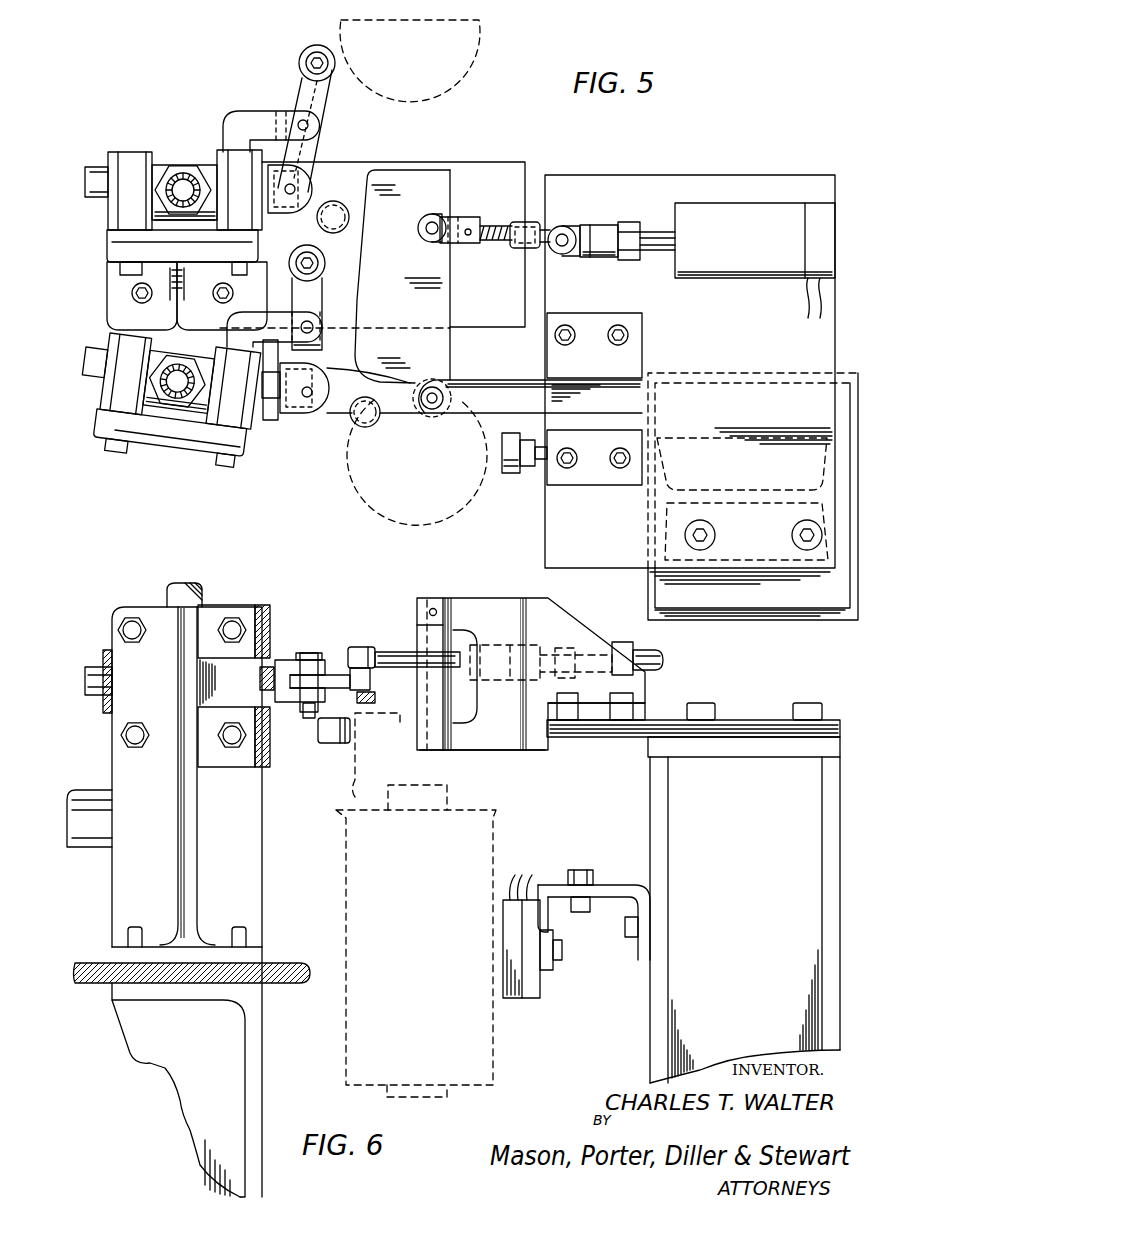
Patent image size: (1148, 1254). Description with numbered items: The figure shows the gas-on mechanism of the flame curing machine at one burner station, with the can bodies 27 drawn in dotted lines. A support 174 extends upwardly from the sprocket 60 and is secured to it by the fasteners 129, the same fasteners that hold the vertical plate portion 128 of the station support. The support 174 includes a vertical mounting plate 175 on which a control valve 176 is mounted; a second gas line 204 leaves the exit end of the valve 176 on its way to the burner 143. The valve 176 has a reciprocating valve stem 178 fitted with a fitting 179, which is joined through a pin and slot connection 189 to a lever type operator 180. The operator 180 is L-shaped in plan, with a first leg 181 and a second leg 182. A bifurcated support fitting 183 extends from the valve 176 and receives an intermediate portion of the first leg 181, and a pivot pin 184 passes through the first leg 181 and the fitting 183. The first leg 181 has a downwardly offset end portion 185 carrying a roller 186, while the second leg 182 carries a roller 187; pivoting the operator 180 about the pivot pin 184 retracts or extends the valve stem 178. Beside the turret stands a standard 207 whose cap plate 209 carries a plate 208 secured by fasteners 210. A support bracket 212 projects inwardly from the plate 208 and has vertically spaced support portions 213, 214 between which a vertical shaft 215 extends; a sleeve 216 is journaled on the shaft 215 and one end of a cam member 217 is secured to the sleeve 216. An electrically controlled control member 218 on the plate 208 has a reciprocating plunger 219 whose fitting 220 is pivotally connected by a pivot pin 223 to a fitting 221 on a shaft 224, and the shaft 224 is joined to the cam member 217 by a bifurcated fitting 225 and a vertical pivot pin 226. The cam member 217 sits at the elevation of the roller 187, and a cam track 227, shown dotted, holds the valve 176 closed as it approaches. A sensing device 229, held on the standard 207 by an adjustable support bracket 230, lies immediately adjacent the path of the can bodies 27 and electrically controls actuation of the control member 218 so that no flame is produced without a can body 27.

In FIG. 5, the can body 27 is at (450, 89).
In FIG. 6, the can body 27 is at (497, 845).
In FIG. 6, the sprocket 60 is at (287, 965).
In FIG. 6, the vertical plate portion 128 is at (256, 1050).
In FIG. 6, the fasteners 129 is at (140, 927).
In FIG. 6, the burner 143 is at (440, 1100).
In FIG. 5, the support 174 is at (113, 250).
In FIG. 6, the support 174 is at (264, 862).
In FIG. 6, the vertical mounting plate 175 is at (107, 662).
In FIG. 5, the control valve 176 is at (133, 152).
In FIG. 5, the valve stem 178 is at (271, 427).
In FIG. 6, the valve stem 178 is at (268, 675).
In FIG. 5, the fitting 179 is at (297, 414).
In FIG. 6, the fitting 179 is at (298, 707).
In FIG. 5, the lever type operator 180 is at (321, 149).
In FIG. 6, the lever type operator 180 is at (333, 668).
In FIG. 5, the first leg 181 is at (325, 302).
In FIG. 5, the second leg 182 is at (342, 416).
In FIG. 5, the bifurcated support fitting 183 is at (272, 112).
In FIG. 5, the pivot pin 184 is at (338, 326).
In FIG. 5, the downwardly offset end portion 185 is at (325, 288).
In FIG. 5, the roller 186 is at (302, 58).
In FIG. 6, the roller 186 is at (335, 737).
In FIG. 5, the roller 187 is at (336, 201).
In FIG. 6, the roller 187 is at (356, 647).
In FIG. 5, the pin and slot connection 189 is at (325, 382).
In FIG. 6, the second gas line 204 is at (85, 850).
In FIG. 6, the standard 207 is at (652, 783).
In FIG. 5, the plate 208 is at (755, 560).
In FIG. 6, the plate 208 is at (750, 722).
In FIG. 5, the cap plate 209 is at (780, 620).
In FIG. 6, the cap plate 209 is at (742, 760).
In FIG. 5, the fasteners 210 is at (780, 535).
In FIG. 6, the fasteners 210 is at (700, 707).
In FIG. 5, the support bracket 212 is at (512, 384).
In FIG. 6, the support bracket 212 is at (525, 735).
In FIG. 6, the support portion 213 is at (465, 605).
In FIG. 6, the support portion 214 is at (458, 740).
In FIG. 6, the vertical shaft 215 is at (425, 602).
In FIG. 6, the sleeve 216 is at (425, 702).
In FIG. 5, the cam member 217 is at (441, 302).
In FIG. 6, the cam member 217 is at (395, 653).
In FIG. 5, the control member 218 is at (720, 280).
In FIG. 5, the reciprocating plunger 219 is at (650, 252).
In FIG. 6, the reciprocating plunger 219 is at (645, 665).
In FIG. 5, the fitting 220 is at (601, 258).
In FIG. 6, the fitting 220 is at (613, 642).
In FIG. 5, the fitting 221 is at (512, 246).
In FIG. 5, the pivot pin 223 is at (563, 237).
In FIG. 5, the shaft 224 is at (493, 221).
In FIG. 5, the bifurcated fitting 225 is at (455, 216).
In FIG. 5, the vertical pivot pin 226 is at (430, 228).
In FIG. 6, the cam track 227 is at (355, 763).
In FIG. 5, the sensing device 229 is at (510, 478).
In FIG. 6, the sensing device 229 is at (510, 1002).
In FIG. 6, the adjustable support bracket 230 is at (610, 897).